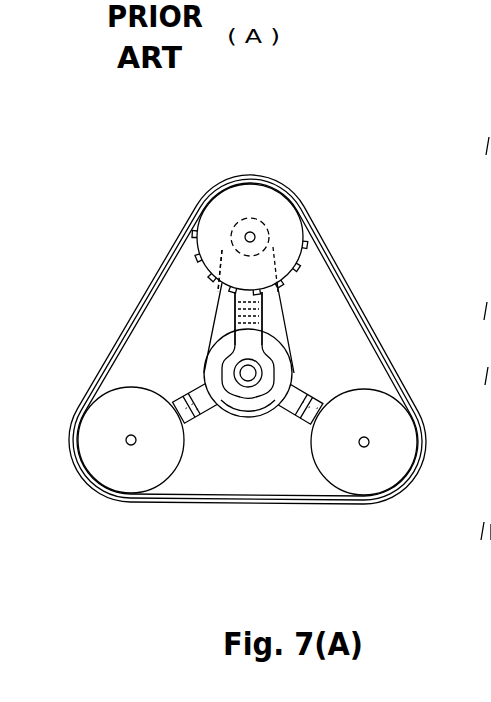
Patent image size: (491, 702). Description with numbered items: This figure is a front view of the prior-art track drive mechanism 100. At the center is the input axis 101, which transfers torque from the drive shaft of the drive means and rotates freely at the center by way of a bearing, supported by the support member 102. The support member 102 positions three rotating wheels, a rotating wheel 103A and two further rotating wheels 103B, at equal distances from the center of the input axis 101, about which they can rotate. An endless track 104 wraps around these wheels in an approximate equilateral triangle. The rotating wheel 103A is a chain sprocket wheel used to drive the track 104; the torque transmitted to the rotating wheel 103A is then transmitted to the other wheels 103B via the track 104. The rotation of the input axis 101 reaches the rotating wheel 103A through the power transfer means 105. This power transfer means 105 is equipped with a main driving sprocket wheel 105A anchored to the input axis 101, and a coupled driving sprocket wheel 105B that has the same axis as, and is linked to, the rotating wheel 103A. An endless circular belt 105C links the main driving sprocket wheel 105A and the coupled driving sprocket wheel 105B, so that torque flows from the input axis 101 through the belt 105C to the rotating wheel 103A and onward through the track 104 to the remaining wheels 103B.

The track drive mechanism 100 is at (352, 173).
The input axis 101 is at (265, 362).
The support member 102 is at (303, 427).
The rotating wheel 103A is at (262, 175).
The rotating wheel 103B is at (365, 386).
The track 104 is at (105, 495).
The power transfer means 105 is at (62, 285).
The main driving sprocket wheel 105A is at (223, 350).
The coupled driving sprocket wheel 105B is at (228, 232).
The endless circular belt 105C is at (217, 297).